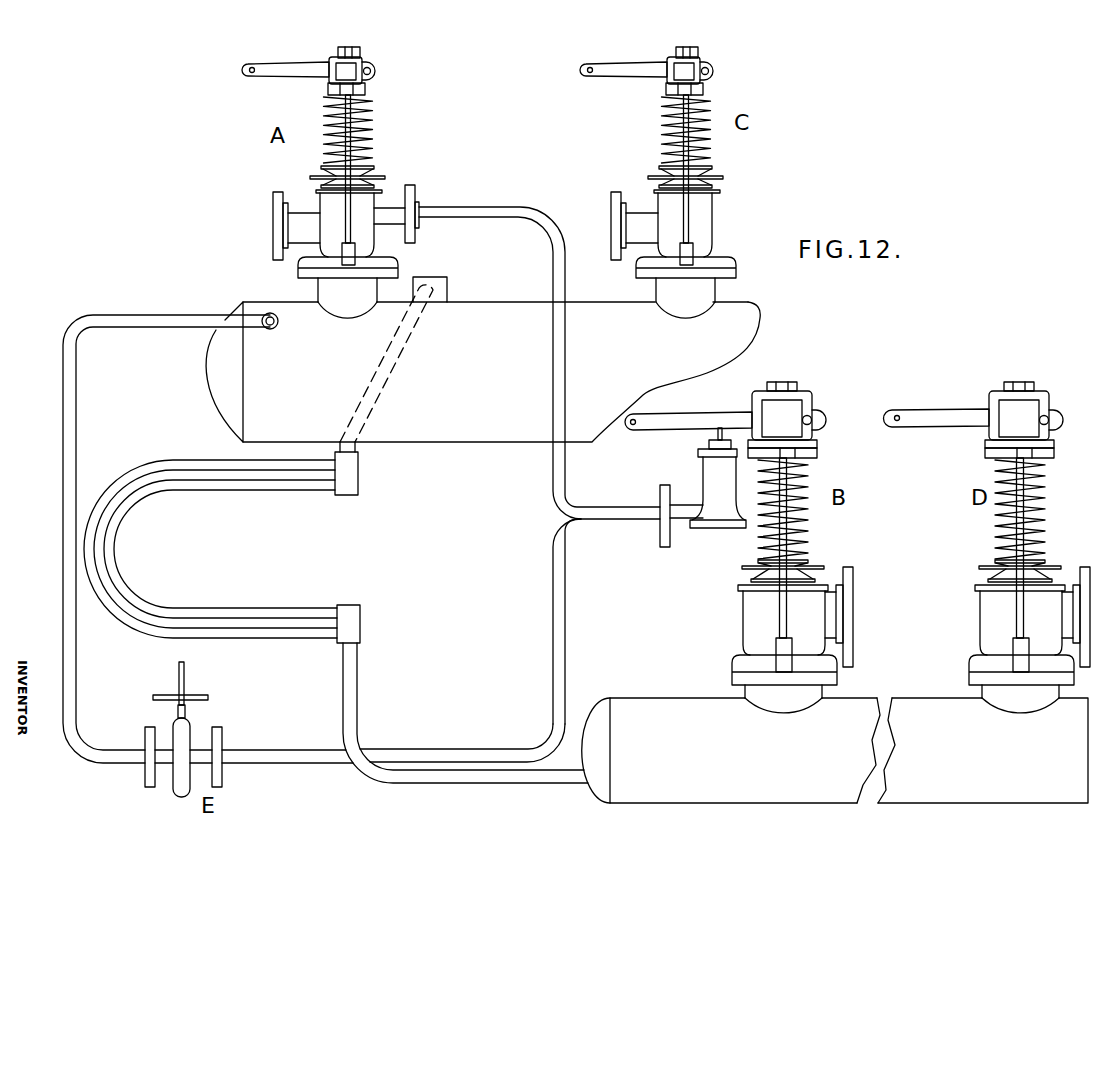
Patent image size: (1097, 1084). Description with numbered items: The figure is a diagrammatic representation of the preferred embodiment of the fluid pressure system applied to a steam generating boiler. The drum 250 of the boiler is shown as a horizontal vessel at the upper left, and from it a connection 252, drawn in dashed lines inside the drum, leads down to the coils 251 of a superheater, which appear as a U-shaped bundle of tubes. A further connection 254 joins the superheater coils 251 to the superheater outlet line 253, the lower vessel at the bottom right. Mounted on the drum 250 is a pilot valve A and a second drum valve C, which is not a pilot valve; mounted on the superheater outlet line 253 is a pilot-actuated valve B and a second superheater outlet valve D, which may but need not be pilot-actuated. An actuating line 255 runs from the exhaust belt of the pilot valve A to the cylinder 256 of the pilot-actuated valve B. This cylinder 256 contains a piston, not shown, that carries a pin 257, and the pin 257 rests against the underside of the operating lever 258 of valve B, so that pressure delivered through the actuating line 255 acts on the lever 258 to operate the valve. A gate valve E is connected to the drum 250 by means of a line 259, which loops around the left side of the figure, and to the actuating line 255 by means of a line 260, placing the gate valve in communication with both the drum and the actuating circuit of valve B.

The drum 250 is at (503, 443).
The superheater coils 251 is at (115, 561).
The connection between drum and superheater coils 252 is at (436, 366).
The superheater outlet line 253 is at (681, 712).
The connection between superheater and outlet line 254 is at (350, 723).
The actuating line 255 is at (553, 252).
The cylinder 256 is at (709, 468).
The pin 257 is at (716, 432).
The operating lever 258 is at (646, 414).
The line 259 is at (67, 450).
The line 260 is at (562, 641).